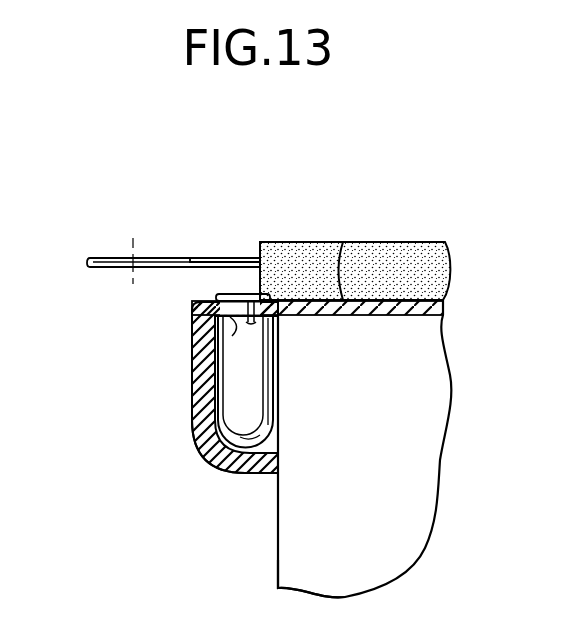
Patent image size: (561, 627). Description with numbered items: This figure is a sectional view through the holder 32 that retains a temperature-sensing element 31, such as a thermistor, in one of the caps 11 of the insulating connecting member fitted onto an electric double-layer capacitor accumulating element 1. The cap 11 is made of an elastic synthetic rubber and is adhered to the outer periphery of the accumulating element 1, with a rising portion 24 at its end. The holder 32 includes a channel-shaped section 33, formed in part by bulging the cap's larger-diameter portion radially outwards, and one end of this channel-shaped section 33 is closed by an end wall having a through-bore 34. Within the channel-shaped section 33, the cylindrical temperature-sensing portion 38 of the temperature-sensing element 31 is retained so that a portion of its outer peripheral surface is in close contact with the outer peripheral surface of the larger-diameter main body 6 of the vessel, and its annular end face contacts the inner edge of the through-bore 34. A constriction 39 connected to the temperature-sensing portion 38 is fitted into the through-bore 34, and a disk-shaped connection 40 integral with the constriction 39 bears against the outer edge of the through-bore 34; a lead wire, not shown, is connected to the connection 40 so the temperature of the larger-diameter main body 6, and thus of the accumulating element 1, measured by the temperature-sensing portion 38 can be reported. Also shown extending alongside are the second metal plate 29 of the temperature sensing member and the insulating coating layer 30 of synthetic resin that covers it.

The electric double-layer capacitor accumulating element 1 is at (268, 523).
The larger-diameter main body 6 is at (290, 557).
The cap 11 is at (411, 236).
The rising portion 24 is at (290, 242).
The second metal plate 29 is at (101, 258).
The insulating coating layer 30 is at (213, 258).
The temperature-sensing element 31 is at (284, 423).
The holder 32 is at (183, 388).
The channel-shaped section 33 is at (190, 413).
The through-bore 34 is at (228, 337).
The cylindrical temperature-sensing portion 38 is at (265, 393).
The constriction 39 is at (256, 318).
The disk-shaped connection 40 is at (215, 296).